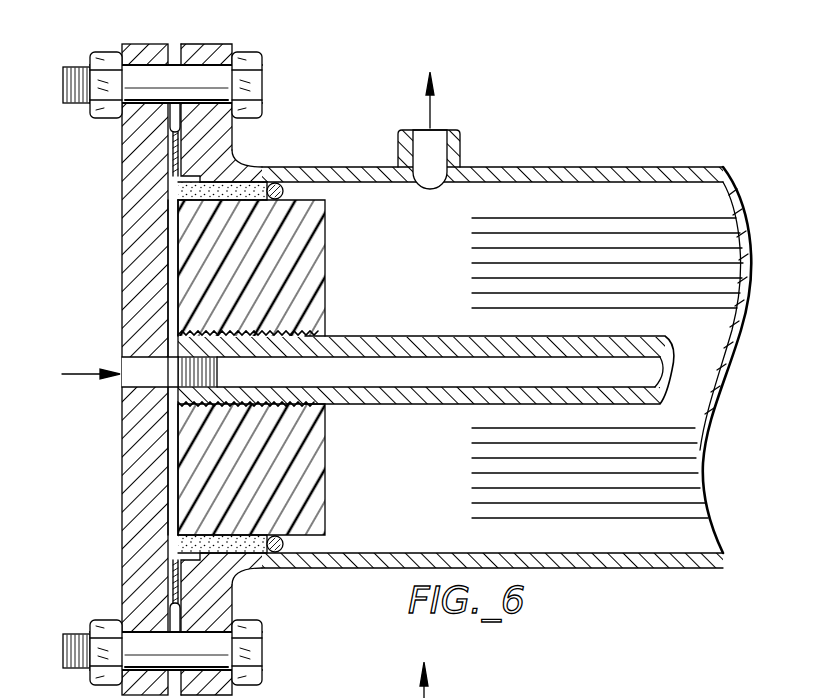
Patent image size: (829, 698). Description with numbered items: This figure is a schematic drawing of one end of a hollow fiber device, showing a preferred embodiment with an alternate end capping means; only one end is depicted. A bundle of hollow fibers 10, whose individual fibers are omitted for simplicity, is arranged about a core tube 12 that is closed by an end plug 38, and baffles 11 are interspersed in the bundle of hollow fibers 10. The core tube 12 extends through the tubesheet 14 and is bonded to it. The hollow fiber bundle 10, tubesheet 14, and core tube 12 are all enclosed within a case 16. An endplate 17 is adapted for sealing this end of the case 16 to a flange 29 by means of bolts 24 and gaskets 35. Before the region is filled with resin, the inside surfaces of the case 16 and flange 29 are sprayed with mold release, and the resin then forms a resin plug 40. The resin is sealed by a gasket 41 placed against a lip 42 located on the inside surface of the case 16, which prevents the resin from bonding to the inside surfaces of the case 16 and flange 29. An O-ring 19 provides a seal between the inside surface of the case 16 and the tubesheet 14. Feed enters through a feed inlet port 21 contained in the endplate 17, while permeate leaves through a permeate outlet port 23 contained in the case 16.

The bundle of hollow fibers 10 is at (410, 369).
The baffles 11 is at (722, 247).
The core tube 12 is at (657, 370).
The tubesheet 14 is at (312, 298).
The case 16 is at (683, 167).
The endplate 17 is at (132, 416).
The O-ring 19 is at (283, 188).
The feed inlet port 21 is at (132, 367).
The permeate outlet port 23 is at (440, 135).
The bolts 24 is at (262, 78).
The flange 29 is at (213, 43).
The gaskets 35 is at (170, 152).
The end plug 38 is at (215, 376).
The resin plug 40 is at (167, 205).
The gasket 41 is at (183, 192).
The lip 42 is at (207, 177).